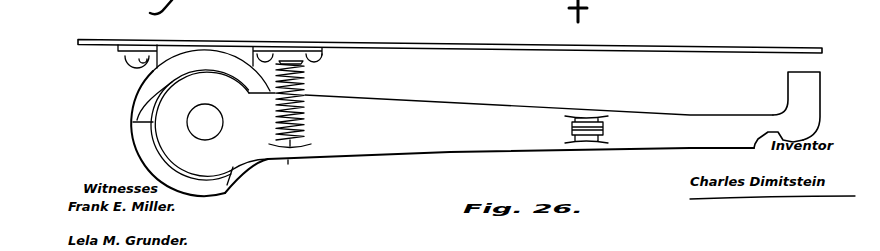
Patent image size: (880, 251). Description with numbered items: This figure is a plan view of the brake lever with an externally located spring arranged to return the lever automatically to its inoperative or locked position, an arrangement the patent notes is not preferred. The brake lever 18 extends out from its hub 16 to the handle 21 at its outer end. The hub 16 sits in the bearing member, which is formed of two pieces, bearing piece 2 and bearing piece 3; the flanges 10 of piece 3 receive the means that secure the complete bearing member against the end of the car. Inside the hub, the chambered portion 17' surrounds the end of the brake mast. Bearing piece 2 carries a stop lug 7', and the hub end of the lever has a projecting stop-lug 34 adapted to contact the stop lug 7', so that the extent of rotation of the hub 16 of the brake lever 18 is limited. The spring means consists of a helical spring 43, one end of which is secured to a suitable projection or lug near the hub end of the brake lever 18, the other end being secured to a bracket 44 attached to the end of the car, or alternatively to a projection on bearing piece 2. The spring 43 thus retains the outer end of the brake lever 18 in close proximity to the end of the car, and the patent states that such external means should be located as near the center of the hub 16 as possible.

The bearing piece 2 is at (207, 50).
The flanges 10 is at (130, 52).
The stop lug 7' is at (138, 102).
The chambered portion of hub 17' is at (159, 122).
The hub 16 is at (168, 140).
The bearing piece 3 is at (226, 182).
The stop-lug 34 is at (252, 165).
The bracket 44 is at (308, 51).
The helical spring 43 is at (305, 95).
The brake lever 18 is at (511, 126).
The handle 21 is at (706, 122).